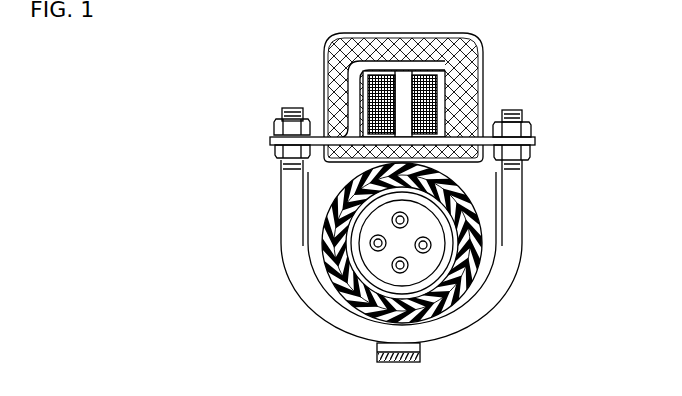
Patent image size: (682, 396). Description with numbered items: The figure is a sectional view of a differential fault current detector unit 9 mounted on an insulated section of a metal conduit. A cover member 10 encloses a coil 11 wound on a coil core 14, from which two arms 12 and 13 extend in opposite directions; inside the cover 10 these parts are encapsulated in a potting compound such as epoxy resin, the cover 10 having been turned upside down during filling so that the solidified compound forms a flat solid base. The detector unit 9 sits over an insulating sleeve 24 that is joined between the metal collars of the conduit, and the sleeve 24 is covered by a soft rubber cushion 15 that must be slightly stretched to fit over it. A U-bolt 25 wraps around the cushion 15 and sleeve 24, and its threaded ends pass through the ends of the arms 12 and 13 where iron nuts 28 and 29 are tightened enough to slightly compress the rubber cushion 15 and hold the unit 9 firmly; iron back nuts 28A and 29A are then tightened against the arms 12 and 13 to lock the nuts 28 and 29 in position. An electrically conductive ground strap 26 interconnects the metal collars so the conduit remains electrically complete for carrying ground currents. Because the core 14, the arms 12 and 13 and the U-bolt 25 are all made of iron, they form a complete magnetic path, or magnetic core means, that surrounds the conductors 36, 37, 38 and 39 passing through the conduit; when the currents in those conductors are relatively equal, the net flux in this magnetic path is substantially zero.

The detector unit 9 is at (312, 40).
The cover member 10 is at (485, 61).
The coil 11 is at (447, 105).
The arm 12 is at (487, 130).
The arm 13 is at (327, 134).
The coil core 14 is at (436, 96).
The soft rubber cushion 15 is at (479, 213).
The insulating sleeve 24 is at (470, 240).
The U-bolt 25 is at (519, 257).
The ground strap 26 is at (400, 358).
The nut 28 is at (274, 126).
The back nut 28A is at (275, 157).
The nut 29 is at (535, 132).
The back nut 29A is at (532, 159).
The conductor 36 is at (392, 223).
The conductor 37 is at (370, 246).
The conductor 38 is at (415, 248).
The conductor 39 is at (392, 268).